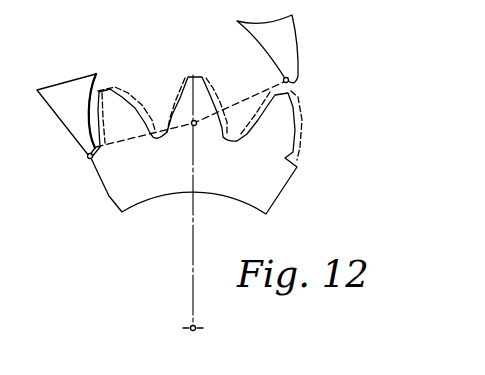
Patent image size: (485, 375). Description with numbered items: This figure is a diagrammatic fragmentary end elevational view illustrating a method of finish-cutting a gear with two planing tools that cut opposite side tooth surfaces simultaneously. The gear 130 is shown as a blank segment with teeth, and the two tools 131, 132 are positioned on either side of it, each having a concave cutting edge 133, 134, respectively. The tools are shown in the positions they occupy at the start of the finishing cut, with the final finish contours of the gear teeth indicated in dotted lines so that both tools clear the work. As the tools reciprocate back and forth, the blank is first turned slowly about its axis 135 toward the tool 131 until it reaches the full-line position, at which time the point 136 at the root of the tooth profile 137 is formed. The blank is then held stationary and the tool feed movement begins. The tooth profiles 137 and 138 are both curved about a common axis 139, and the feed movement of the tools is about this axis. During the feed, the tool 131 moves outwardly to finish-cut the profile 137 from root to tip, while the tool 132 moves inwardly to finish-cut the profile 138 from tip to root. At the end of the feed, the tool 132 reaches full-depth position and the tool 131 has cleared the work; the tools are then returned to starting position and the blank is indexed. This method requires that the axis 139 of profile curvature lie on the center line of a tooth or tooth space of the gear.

The gear 130 is at (240, 193).
The tool 131 is at (62, 112).
The tool 132 is at (308, 41).
The concave cutting edge 133 is at (97, 79).
The concave cutting edge 134 is at (258, 43).
The axis 135 is at (195, 326).
The point 136 is at (94, 148).
The tooth profile 137 is at (126, 115).
The tooth profile 138 is at (298, 131).
The common axis 139 is at (193, 126).